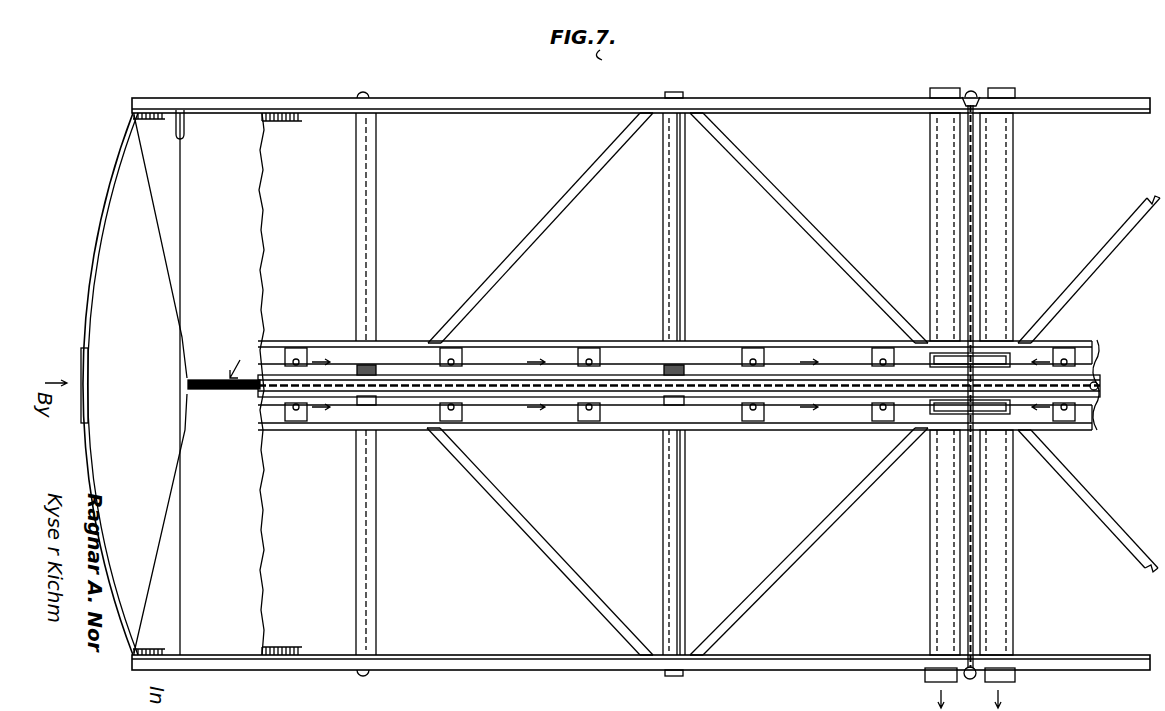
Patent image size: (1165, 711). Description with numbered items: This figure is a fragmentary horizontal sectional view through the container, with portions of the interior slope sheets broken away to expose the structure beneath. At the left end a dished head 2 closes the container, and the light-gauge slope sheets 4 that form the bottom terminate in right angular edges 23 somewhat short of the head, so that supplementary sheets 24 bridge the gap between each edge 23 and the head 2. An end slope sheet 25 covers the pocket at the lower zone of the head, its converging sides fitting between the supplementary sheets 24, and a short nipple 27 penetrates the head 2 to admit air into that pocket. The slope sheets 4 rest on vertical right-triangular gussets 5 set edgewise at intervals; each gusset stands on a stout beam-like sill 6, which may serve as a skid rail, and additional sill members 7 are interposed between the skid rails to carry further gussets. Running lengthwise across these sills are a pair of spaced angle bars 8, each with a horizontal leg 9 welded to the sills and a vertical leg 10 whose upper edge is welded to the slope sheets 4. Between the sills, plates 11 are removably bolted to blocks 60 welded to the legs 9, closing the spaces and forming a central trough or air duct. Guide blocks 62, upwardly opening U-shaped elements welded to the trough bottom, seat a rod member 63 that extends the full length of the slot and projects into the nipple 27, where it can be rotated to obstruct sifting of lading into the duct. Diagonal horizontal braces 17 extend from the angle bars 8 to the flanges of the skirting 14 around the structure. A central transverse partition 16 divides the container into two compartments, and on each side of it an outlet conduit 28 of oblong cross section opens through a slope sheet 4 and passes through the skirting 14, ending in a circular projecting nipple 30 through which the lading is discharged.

The dished head 2 is at (107, 204).
The slope sheet 4 is at (248, 242).
The gusset 5 is at (372, 268).
The sill 6 is at (372, 88).
The additional sill member 7 is at (684, 268).
The angle bar 8 is at (783, 343).
The horizontal leg 9 is at (568, 347).
The vertical leg 10 is at (604, 341).
The plate 11 is at (403, 405).
The skirting 14 is at (521, 90).
The transverse partition 16 is at (975, 182).
The diagonal horizontal brace 17 is at (522, 244).
The right angular edge 23 is at (180, 112).
The supplementary sheet 24 is at (162, 148).
The end slope sheet 25 is at (122, 288).
The nipple 27 is at (84, 418).
The outlet conduit 28 is at (945, 282).
The nipple 30 is at (928, 681).
The block 60 is at (592, 408).
The guide block 62 is at (368, 368).
The rod member 63 is at (560, 388).